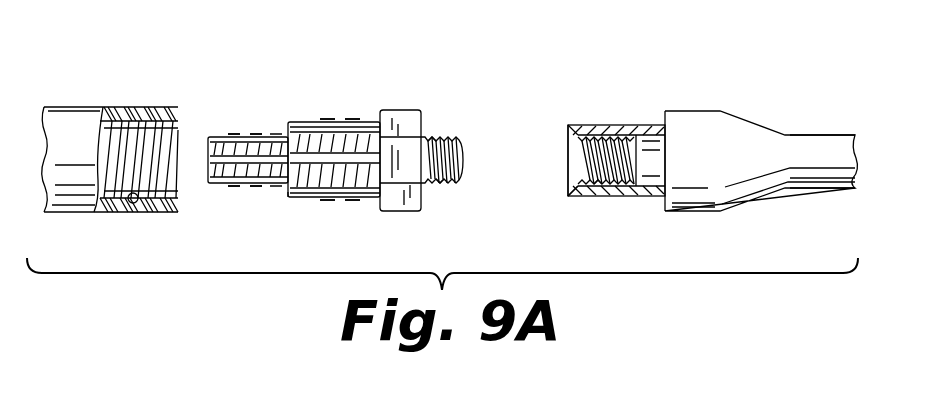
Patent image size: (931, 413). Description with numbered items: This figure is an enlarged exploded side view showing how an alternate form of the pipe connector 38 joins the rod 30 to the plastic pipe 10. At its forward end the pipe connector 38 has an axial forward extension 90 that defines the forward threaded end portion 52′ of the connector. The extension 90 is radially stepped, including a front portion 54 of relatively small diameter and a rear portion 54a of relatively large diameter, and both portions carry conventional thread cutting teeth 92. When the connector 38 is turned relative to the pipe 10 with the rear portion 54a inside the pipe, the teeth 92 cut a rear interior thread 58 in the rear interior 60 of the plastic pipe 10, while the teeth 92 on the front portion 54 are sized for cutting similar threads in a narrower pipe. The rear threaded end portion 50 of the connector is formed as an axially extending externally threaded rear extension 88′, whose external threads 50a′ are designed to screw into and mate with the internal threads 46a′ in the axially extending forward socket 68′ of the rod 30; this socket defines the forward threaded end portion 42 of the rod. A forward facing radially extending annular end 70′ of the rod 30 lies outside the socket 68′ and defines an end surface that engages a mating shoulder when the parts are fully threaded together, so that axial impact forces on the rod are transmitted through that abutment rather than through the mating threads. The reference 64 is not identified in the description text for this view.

The plastic pipe 10 is at (88, 93).
The rear interior thread 58 is at (135, 121).
The rear interior 60 is at (133, 203).
The front portion 54 is at (250, 136).
The thread cutting teeth 92 is at (248, 183).
The axial forward extension 90 is at (280, 202).
The forward threaded end portion 52′ is at (305, 109).
The rear portion 54a is at (337, 122).
The pipe connector 38 is at (402, 80).
The rear threaded end portion 50 is at (458, 132).
The rear extension 88′ is at (432, 138).
The external threads 50a′ is at (440, 183).
The forward threaded end portion 42 is at (581, 128).
The forward socket 68′ is at (567, 149).
The annular end 70′ is at (567, 195).
The internal threads 46a′ is at (598, 181).
The sleeve 64 is at (682, 111).
The rod 30 is at (803, 128).